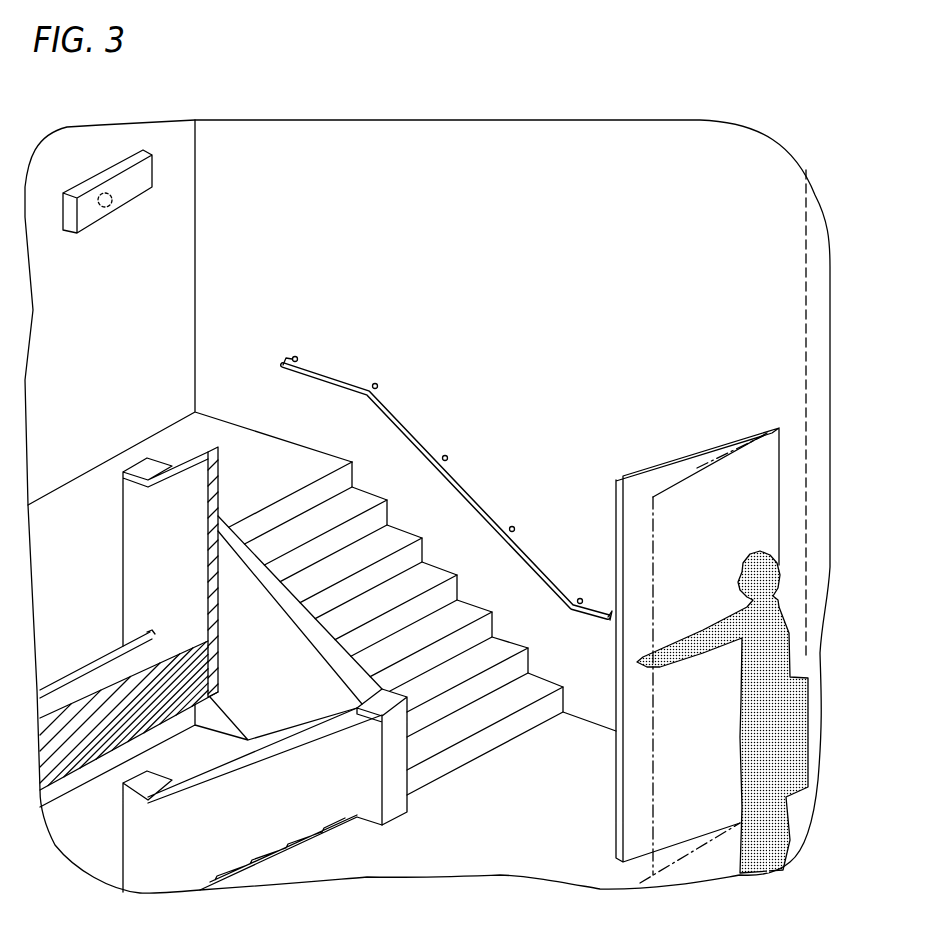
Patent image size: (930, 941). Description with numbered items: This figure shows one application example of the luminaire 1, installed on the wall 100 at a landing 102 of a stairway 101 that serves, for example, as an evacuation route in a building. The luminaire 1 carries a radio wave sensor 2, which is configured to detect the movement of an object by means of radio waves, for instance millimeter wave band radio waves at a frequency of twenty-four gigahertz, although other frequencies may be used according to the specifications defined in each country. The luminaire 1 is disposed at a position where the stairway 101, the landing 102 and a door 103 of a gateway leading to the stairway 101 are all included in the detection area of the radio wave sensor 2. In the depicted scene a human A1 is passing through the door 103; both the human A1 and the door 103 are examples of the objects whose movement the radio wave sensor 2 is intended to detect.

The wall 100 is at (78, 146).
The luminaire 1 is at (137, 205).
The radio wave sensor 2 is at (109, 207).
The stairway 101 is at (433, 575).
The landing 102 is at (222, 427).
The door 103 is at (640, 477).
The human A1 is at (742, 687).